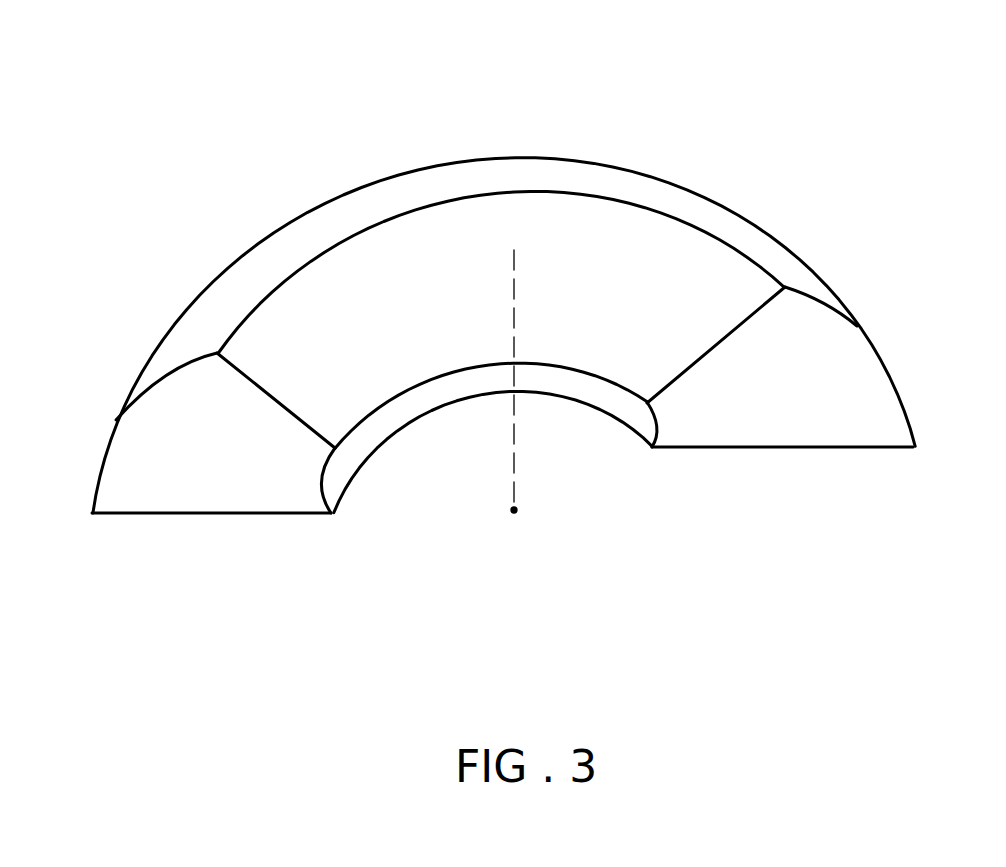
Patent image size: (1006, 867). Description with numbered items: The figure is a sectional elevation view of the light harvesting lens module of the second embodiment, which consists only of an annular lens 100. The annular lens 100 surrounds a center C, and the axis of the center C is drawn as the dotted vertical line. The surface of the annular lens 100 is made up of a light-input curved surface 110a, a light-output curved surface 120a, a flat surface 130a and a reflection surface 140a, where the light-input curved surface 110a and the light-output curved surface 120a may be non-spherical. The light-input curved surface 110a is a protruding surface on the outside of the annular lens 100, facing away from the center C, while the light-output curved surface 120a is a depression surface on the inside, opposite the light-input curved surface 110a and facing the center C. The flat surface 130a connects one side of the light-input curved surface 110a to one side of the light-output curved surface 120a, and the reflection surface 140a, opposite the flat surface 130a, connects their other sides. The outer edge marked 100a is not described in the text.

The annular lens 100 is at (868, 167).
The outer rear arc edge of ring 100a is at (670, 190).
The light-input curved surface 110a is at (146, 370).
The light-output curved surface 120a is at (345, 456).
The flat surface 130a is at (253, 513).
The reflection surface 140a is at (255, 383).
The center C is at (517, 512).